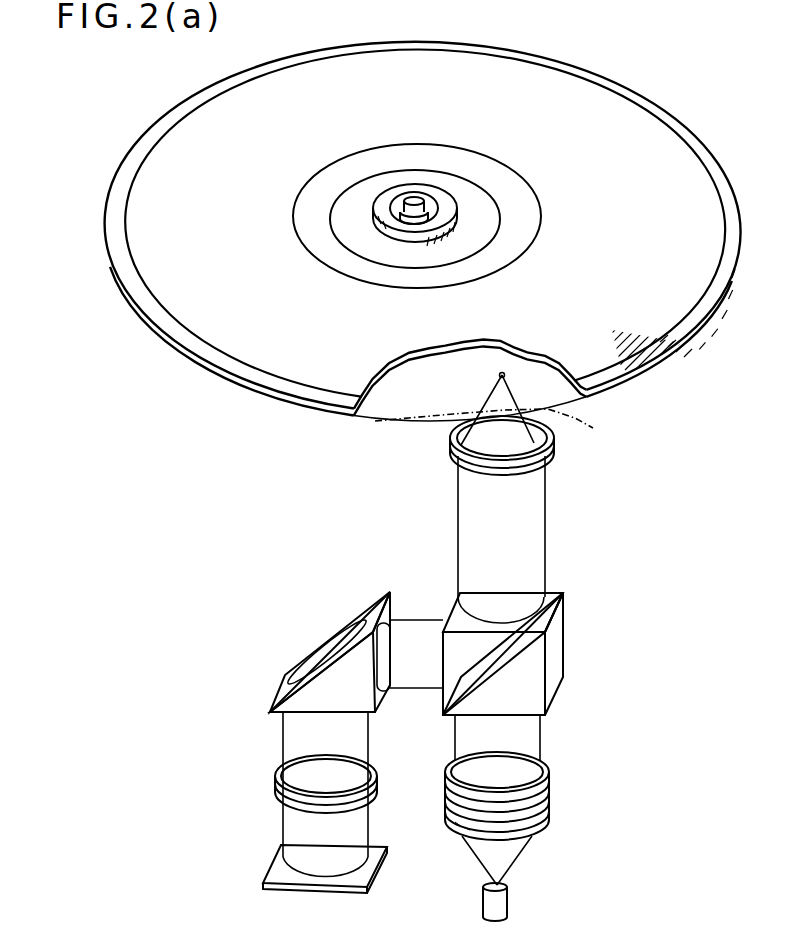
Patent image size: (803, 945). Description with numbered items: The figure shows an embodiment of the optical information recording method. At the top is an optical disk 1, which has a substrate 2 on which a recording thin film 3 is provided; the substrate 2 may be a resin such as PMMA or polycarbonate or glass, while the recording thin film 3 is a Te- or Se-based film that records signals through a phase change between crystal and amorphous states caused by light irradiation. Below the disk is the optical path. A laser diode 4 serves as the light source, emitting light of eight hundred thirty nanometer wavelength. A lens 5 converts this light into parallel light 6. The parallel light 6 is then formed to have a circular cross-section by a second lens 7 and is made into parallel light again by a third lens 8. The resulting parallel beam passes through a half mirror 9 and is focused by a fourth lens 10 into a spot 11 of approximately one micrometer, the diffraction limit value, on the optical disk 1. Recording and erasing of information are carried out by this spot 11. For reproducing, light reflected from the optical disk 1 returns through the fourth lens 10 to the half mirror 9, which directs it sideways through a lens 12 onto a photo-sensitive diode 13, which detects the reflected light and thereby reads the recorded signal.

The optical disk 1 is at (693, 342).
The substrate 2 is at (640, 378).
The recording thin film 3 is at (372, 393).
The laser diode 4 is at (500, 903).
The lens 5 is at (547, 823).
The parallel light 6 is at (457, 823).
The second lens 7 is at (547, 807).
The third lens 8 is at (545, 783).
The half mirror 9 is at (512, 648).
The fourth lens 10 is at (525, 435).
The spot 11 is at (593, 428).
The lens 12 is at (278, 782).
The photo-sensitive diode 13 is at (358, 893).